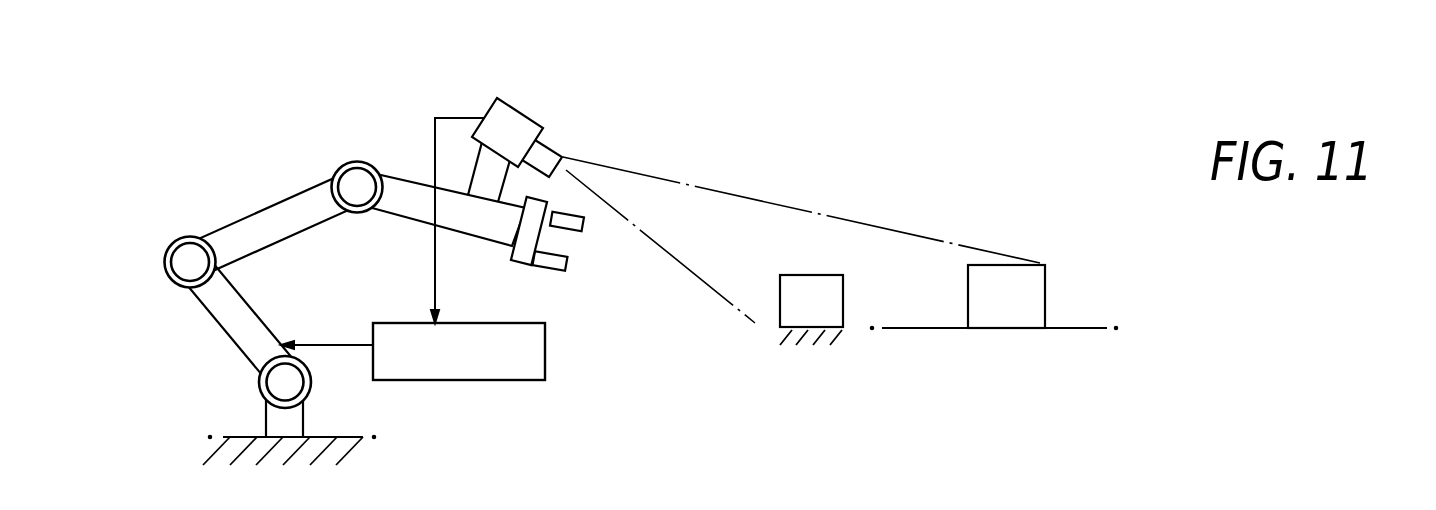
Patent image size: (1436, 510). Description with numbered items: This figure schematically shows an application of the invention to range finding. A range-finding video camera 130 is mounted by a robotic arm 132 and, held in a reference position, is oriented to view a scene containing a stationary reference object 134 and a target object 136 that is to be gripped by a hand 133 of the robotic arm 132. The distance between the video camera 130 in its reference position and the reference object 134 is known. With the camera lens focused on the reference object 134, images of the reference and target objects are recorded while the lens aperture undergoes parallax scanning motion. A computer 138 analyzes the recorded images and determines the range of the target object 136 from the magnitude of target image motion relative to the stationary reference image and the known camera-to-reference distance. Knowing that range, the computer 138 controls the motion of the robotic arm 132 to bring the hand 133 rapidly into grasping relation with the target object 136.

The range-finding video camera 130 is at (531, 129).
The robotic arm 132 is at (211, 334).
The hand 133 is at (557, 267).
The stationary reference object 134 is at (802, 288).
The target object 136 is at (1038, 293).
The computer 138 is at (546, 352).